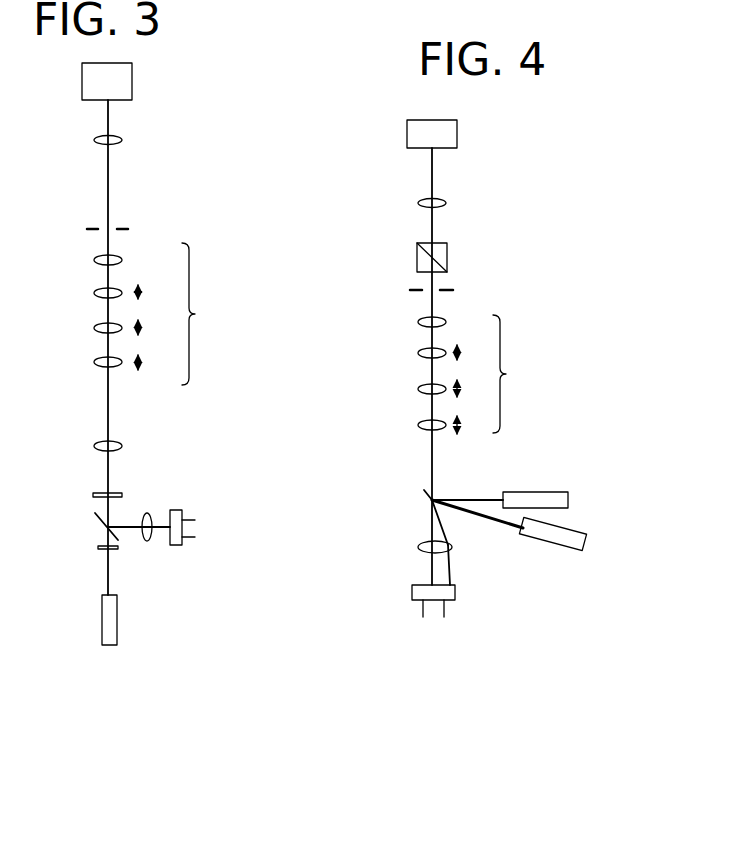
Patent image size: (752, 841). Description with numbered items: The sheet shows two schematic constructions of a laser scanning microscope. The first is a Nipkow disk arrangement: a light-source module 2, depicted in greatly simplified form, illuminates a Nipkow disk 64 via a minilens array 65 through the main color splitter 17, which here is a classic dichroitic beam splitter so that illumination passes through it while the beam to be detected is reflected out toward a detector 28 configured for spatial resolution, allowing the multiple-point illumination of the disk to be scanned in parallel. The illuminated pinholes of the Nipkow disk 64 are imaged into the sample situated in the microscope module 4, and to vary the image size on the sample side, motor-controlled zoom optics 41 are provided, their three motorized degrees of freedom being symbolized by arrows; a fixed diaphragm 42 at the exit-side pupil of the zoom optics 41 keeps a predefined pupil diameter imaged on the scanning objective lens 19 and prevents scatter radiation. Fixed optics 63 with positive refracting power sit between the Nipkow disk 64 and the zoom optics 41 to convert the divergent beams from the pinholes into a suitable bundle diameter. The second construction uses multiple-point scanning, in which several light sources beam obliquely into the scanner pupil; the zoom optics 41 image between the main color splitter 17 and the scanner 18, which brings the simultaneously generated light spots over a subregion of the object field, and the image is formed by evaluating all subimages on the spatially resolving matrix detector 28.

In FIG. 3, the light-source module 2 is at (128, 638).
In FIG. 4, the light-source module 2 is at (609, 508).
In FIG. 3, the microscope module 4 is at (82, 87).
In FIG. 4, the microscope module 4 is at (407, 128).
In FIG. 3, the main color splitter 17 is at (96, 520).
In FIG. 4, the main color splitter 17 is at (425, 489).
In FIG. 4, the scanner 18 is at (447, 253).
In FIG. 3, the scanning objective lens 19 is at (122, 138).
In FIG. 4, the scanning objective lens 19 is at (445, 202).
In FIG. 3, the detector 28 is at (174, 510).
In FIG. 4, the detector 28 is at (455, 593).
In FIG. 3, the zoom optics 41 is at (162, 314).
In FIG. 4, the zoom optics 41 is at (482, 374).
In FIG. 3, the diaphragm 42 is at (128, 229).
In FIG. 4, the diaphragm 42 is at (453, 288).
In FIG. 3, the fixed optics 63 is at (122, 443).
In FIG. 3, the Nipkow disk 64 is at (93, 494).
In FIG. 3, the minilens array 65 is at (98, 549).